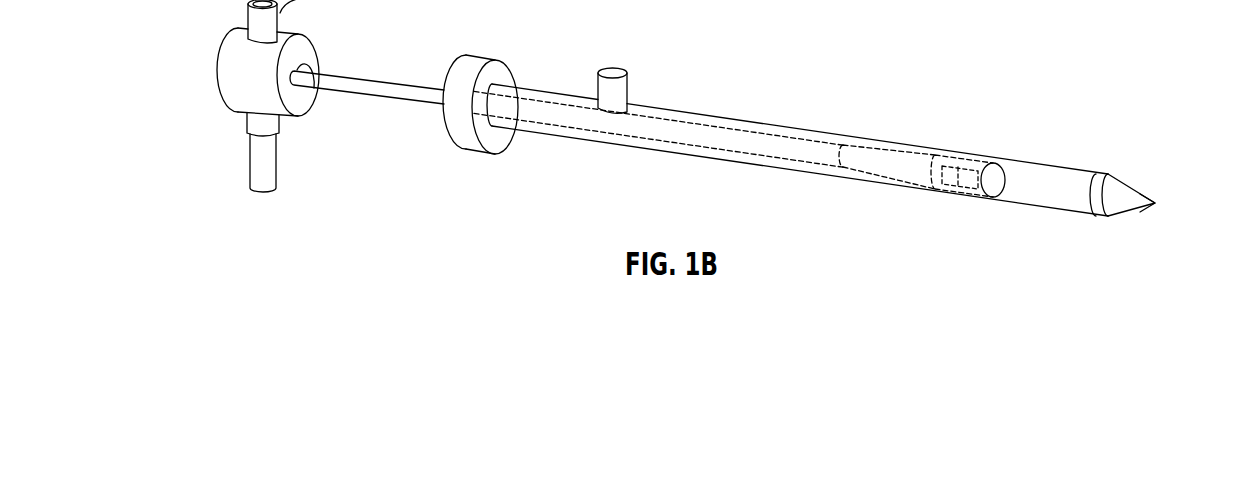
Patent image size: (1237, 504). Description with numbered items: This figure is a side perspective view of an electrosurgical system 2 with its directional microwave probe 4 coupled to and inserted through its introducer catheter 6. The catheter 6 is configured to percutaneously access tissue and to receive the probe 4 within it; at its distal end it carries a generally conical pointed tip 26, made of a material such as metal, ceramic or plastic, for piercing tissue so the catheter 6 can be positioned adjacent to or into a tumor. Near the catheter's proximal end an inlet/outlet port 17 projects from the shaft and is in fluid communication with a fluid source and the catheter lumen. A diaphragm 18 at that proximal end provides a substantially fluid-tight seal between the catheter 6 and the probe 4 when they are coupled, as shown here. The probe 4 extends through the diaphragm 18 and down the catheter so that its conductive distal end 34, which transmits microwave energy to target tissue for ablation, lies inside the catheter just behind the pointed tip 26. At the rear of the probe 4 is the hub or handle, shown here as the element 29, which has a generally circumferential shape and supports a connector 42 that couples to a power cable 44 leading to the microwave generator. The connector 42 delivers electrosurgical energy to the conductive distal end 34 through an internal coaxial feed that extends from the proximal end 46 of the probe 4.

The system 2 is at (863, 112).
The directional microwave probe 4 is at (388, 81).
The catheter 6 is at (1120, 164).
The inlet/outlet port 17 is at (613, 73).
The diaphragm 18 is at (481, 58).
The pointed tip 26 is at (1140, 192).
The hub 29 is at (316, 30).
The conductive distal end 34 is at (921, 146).
The connector 42 is at (282, 127).
The power cable 44 is at (282, 165).
The proximal end 46 is at (301, 58).